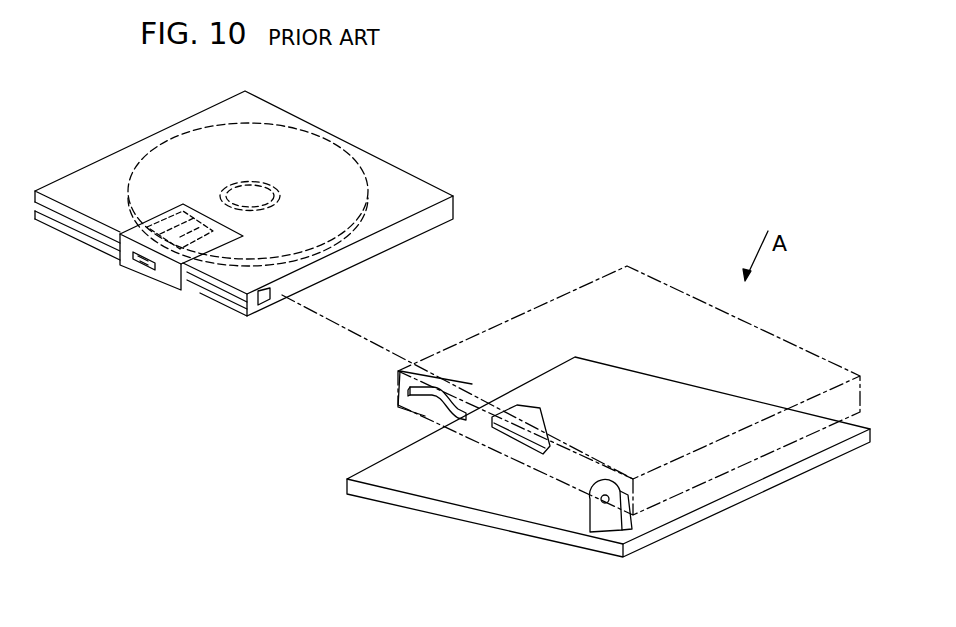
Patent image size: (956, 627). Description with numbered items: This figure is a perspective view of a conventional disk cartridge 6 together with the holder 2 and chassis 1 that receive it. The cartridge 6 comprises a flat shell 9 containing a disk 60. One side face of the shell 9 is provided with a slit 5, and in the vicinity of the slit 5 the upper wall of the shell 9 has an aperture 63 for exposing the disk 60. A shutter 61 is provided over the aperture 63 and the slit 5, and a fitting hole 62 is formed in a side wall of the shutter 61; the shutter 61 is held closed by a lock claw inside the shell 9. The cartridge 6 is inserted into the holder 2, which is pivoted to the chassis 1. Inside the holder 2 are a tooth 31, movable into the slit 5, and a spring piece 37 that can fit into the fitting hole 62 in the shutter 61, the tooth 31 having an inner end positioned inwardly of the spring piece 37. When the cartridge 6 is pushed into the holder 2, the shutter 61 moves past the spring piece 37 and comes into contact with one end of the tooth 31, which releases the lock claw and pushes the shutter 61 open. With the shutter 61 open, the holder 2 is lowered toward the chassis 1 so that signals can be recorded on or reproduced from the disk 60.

The chassis 1 is at (478, 497).
The holder 2 is at (748, 342).
The slit 5 is at (267, 303).
The cartridge 6 is at (383, 140).
The shell 9 is at (411, 187).
The tooth 31 is at (540, 428).
The spring piece 37 is at (420, 398).
The disk 60 is at (280, 124).
The shutter 61 is at (165, 277).
The fitting hole 62 is at (140, 273).
The aperture 63 is at (203, 298).